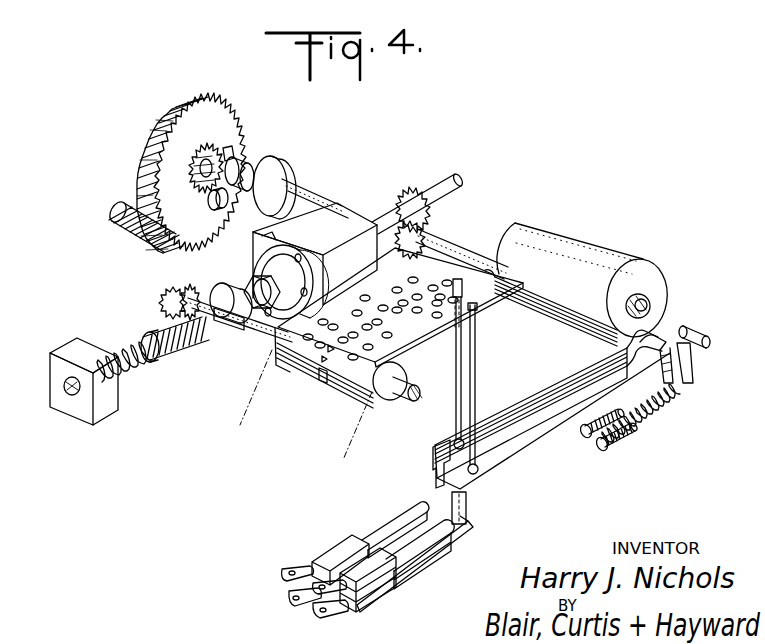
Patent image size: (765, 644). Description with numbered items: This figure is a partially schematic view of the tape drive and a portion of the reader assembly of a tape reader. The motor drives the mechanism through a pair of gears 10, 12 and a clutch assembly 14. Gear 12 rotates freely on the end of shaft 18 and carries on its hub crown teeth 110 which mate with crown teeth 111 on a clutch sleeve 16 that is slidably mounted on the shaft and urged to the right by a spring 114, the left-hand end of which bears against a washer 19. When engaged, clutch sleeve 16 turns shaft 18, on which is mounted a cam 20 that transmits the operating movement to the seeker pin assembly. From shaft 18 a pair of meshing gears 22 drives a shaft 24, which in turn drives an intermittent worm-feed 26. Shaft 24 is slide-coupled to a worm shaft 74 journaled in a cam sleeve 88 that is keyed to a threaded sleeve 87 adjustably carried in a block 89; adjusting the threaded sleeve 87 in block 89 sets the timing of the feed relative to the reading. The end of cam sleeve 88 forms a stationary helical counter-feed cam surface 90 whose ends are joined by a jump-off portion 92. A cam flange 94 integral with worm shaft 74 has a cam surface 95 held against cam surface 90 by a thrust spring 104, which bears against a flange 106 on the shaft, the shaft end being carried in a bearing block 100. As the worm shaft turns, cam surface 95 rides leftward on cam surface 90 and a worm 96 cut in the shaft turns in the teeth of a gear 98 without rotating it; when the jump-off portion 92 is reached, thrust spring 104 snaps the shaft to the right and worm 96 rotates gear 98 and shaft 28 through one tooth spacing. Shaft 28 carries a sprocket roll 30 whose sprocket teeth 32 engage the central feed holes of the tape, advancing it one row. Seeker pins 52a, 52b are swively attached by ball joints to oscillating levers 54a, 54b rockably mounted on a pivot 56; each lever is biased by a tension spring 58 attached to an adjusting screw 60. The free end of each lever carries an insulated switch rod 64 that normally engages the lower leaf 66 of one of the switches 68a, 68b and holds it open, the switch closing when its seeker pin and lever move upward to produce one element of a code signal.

The gear 10 is at (125, 226).
The gear 12 is at (173, 122).
The clutch assembly 14 is at (224, 146).
The clutch sleeve 16 is at (214, 204).
The shaft 18 is at (341, 204).
The washer 19 is at (286, 176).
The cam 20 is at (581, 242).
The meshing gears 22 is at (441, 213).
The shaft 24 is at (450, 183).
The intermittent worm-feed 26 is at (156, 311).
The shaft 28 is at (262, 340).
The sprocket roll 30 is at (389, 400).
The sprocket teeth 32 is at (323, 386).
The seeker pin 52a is at (477, 405).
The seeker pin 52b is at (455, 397).
The oscillating lever 54a is at (553, 424).
The oscillating lever 54b is at (543, 390).
The pivot 56 is at (700, 330).
The tension spring 58 is at (665, 405).
The adjusting screw 60 is at (618, 440).
The insulated switch rod 64 is at (433, 455).
The lower leaf 66 is at (462, 533).
The switch 68a is at (413, 572).
The switch 68b is at (372, 532).
The worm shaft 74 is at (324, 366).
The threaded sleeve 87 is at (297, 265).
The cam sleeve 88 is at (258, 262).
The block 89 is at (265, 231).
The counter-feed cam surface 90 is at (244, 284).
The jump-off portion 92 is at (400, 307).
The cam flange 94 is at (230, 334).
The cam surface 95 is at (219, 287).
The worm 96 is at (192, 348).
The gear 98 is at (188, 289).
The bearing block 100 is at (55, 373).
The thrust spring 104 is at (146, 373).
The flange 106 is at (143, 336).
The crown teeth 110 is at (206, 150).
The crown teeth 111 is at (202, 184).
The spring 114 is at (251, 166).